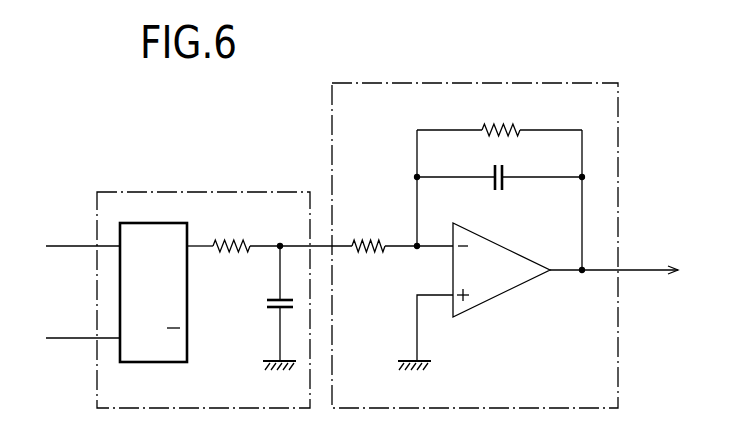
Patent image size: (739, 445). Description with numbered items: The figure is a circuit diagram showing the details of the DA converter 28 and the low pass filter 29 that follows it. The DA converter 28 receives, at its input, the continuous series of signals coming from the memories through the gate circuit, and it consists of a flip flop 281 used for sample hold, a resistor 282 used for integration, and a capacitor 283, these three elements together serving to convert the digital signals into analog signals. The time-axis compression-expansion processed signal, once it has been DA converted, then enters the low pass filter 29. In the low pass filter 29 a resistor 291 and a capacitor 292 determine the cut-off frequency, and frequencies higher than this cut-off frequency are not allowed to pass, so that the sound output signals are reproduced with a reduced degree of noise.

The DA converter 28 is at (123, 192).
The flip flop 281 is at (160, 223).
The resistor 282 is at (229, 238).
The capacitor 283 is at (268, 310).
The low pass filter 29 is at (619, 112).
The resistor 291 is at (496, 122).
The capacitor 292 is at (503, 187).